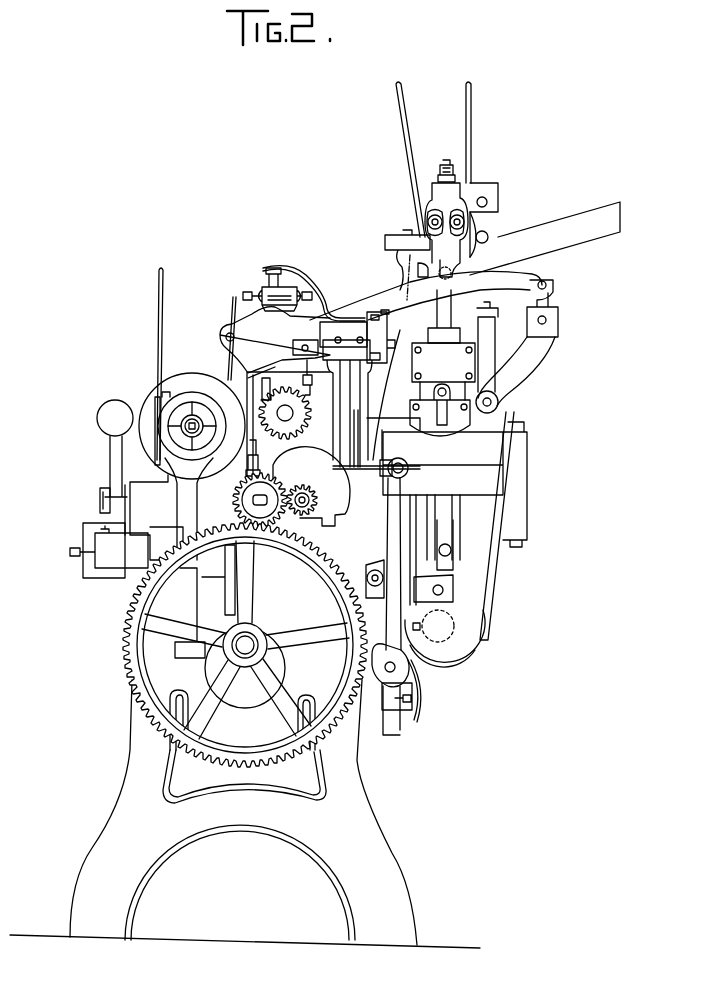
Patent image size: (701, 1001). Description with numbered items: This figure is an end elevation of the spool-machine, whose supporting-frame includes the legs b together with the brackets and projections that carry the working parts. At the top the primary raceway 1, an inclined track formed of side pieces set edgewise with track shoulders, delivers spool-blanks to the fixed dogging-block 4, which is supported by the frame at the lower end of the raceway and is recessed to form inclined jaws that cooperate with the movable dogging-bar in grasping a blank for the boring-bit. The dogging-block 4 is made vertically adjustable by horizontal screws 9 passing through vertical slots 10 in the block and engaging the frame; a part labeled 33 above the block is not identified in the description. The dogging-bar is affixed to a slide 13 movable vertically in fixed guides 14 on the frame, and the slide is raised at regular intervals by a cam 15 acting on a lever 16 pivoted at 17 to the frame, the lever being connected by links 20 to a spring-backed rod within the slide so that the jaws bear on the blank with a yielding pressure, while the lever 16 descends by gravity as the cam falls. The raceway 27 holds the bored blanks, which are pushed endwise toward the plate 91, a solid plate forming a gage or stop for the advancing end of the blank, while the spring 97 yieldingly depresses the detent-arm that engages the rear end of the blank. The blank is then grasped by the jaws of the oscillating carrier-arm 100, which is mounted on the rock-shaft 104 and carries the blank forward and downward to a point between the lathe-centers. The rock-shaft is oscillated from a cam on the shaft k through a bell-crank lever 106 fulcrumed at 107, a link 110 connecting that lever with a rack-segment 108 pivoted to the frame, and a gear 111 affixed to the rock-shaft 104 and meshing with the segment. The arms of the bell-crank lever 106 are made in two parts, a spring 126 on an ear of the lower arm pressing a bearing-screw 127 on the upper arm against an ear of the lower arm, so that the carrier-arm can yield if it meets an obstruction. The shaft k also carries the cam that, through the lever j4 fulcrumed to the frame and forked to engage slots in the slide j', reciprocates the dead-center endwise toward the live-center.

The primary raceway 1 is at (604, 231).
The fixed block 4 is at (437, 195).
The horizontal screws 9 is at (428, 222).
The vertical slots 10 is at (428, 215).
The slide 13 is at (470, 325).
The fixed guides 14 is at (428, 360).
The cam 15 is at (465, 645).
The lever 16 is at (418, 577).
The pivot 17 is at (368, 574).
The links 20 is at (451, 545).
The raceway 27 is at (387, 302).
The screw 33 is at (443, 163).
The plate 91 is at (243, 326).
The spring 97 is at (306, 270).
The oscillating carrier-arm 100 is at (245, 370).
The rock-shaft 104 is at (292, 410).
The bell-crank lever 106 is at (302, 447).
The fulcrum 107 is at (384, 700).
The rack-segment 108 is at (388, 612).
The link 110 is at (390, 460).
The gear 111 is at (275, 402).
The spring 126 is at (420, 694).
The bearing-screw 127 is at (410, 722).
The legs b is at (125, 792).
The slide j' is at (176, 464).
The lever j4 is at (187, 505).
The shaft k is at (255, 646).